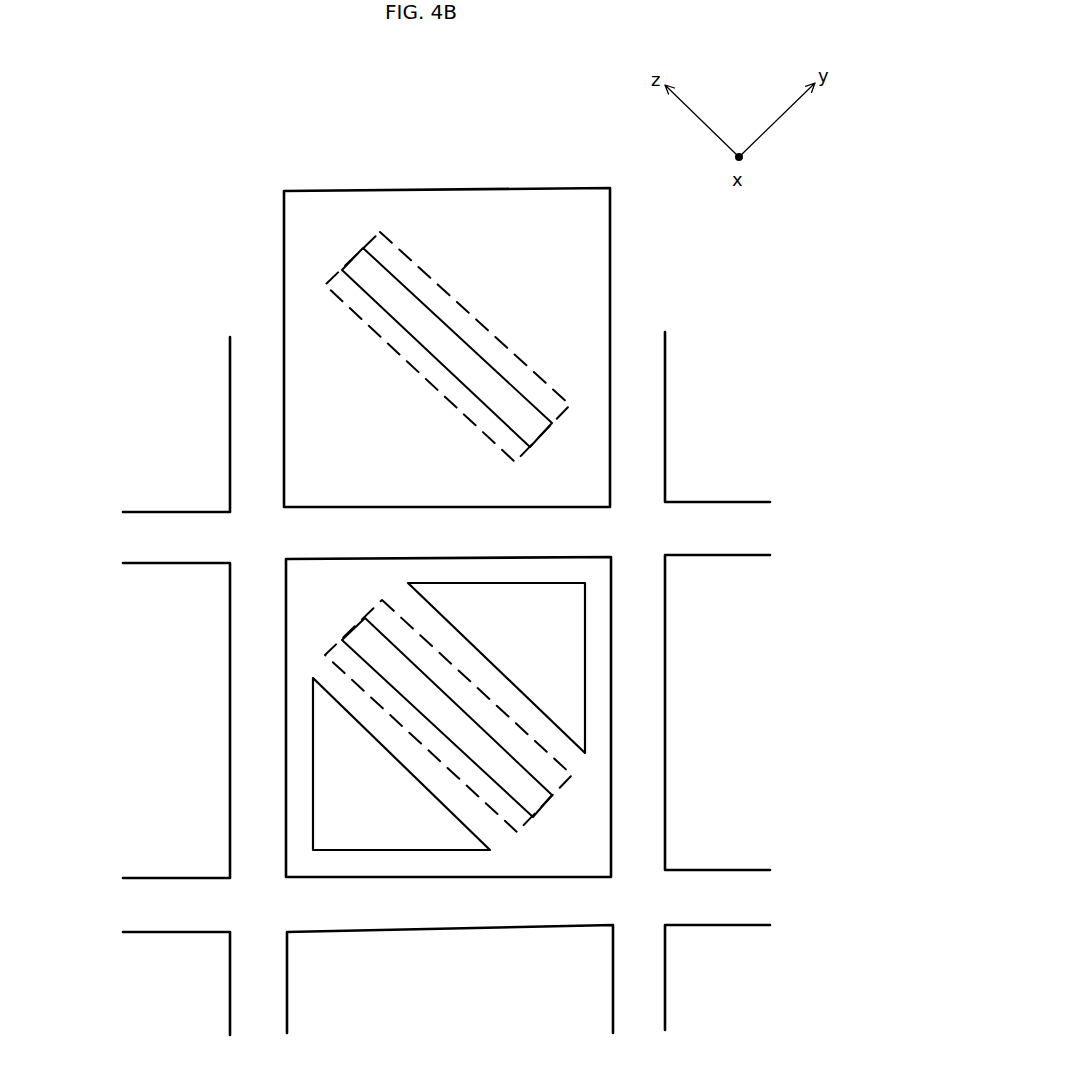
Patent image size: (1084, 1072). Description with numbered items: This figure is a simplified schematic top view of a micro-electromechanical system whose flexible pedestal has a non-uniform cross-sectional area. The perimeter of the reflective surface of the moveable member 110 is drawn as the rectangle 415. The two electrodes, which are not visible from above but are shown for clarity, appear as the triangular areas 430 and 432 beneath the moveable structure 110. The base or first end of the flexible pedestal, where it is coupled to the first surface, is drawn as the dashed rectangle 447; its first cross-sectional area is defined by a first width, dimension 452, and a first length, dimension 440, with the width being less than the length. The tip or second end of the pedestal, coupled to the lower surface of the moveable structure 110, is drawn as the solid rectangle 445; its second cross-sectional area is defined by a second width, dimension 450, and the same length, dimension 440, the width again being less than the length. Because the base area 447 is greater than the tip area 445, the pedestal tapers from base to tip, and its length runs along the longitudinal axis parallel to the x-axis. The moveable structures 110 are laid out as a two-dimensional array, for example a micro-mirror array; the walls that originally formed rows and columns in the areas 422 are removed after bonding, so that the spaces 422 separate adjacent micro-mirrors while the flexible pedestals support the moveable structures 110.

The moveable member 110 is at (176, 470).
The spaces 422 is at (494, 543).
The rectangle 415 is at (487, 190).
The triangular area 430 is at (401, 821).
The triangular area 432 is at (529, 633).
The length dimension 440 is at (580, 381).
The solid rectangle 445 is at (543, 788).
The dashed rectangle 447 is at (523, 827).
The second width dimension 450 is at (530, 352).
The first width dimension 452 is at (522, 473).